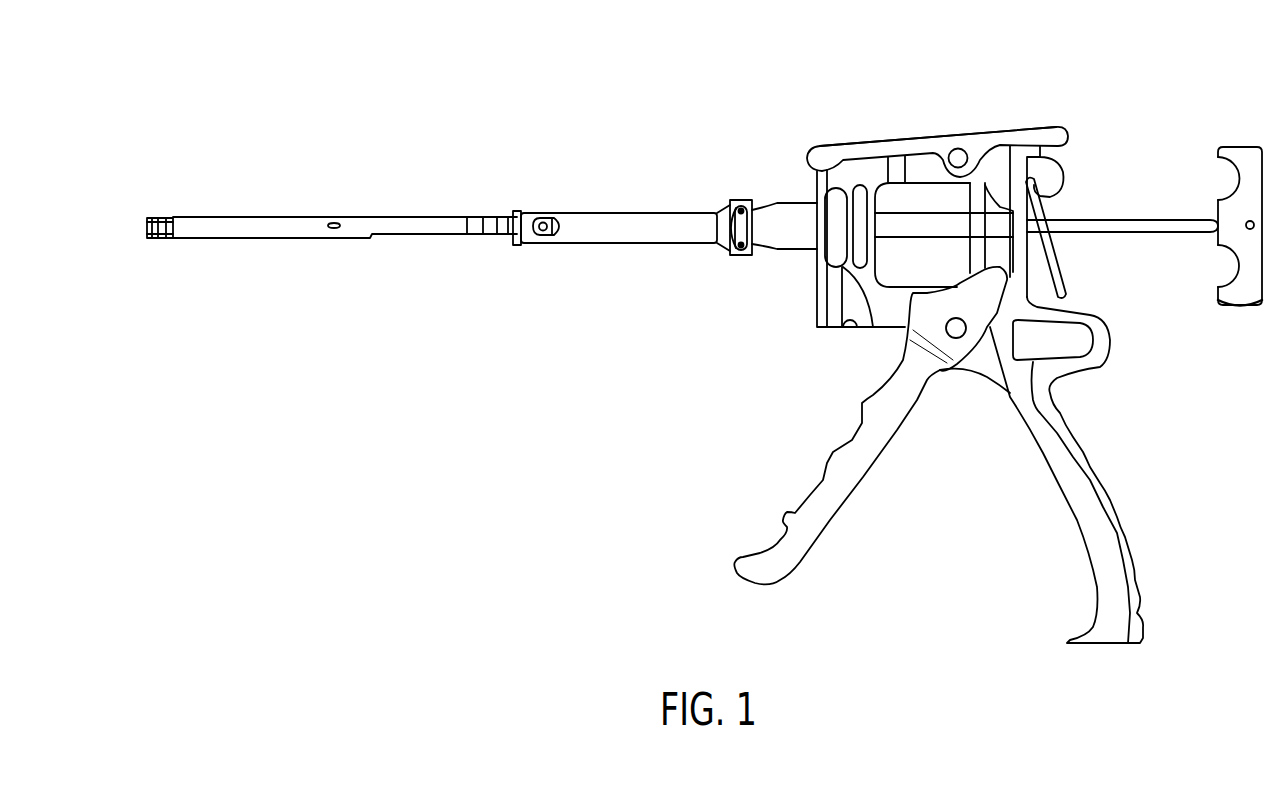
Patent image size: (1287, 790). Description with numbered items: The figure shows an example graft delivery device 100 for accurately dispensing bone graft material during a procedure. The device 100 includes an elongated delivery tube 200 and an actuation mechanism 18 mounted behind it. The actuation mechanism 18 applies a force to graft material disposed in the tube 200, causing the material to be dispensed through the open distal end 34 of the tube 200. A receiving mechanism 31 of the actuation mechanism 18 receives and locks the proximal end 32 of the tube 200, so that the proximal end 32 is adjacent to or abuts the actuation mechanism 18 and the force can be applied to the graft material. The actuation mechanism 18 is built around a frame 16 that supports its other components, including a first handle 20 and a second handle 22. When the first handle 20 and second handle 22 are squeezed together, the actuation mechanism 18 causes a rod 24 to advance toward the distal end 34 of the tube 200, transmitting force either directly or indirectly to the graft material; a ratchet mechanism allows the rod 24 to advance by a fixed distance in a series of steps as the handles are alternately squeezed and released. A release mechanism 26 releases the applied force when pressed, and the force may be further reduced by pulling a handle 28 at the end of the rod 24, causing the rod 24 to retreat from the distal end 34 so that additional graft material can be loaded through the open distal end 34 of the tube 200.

The graft delivery device 100 is at (985, 95).
The frame 16 is at (880, 147).
The actuation mechanism 18 is at (760, 521).
The first handle 20 is at (873, 403).
The second handle 22 is at (1108, 500).
The rod 24 is at (1134, 221).
The release mechanism 26 is at (1063, 283).
The handle 28 is at (1243, 147).
The receiving mechanism 31 is at (832, 258).
The proximal end 32 is at (735, 200).
The open distal end 34 is at (157, 217).
The delivery tube 200 is at (370, 217).